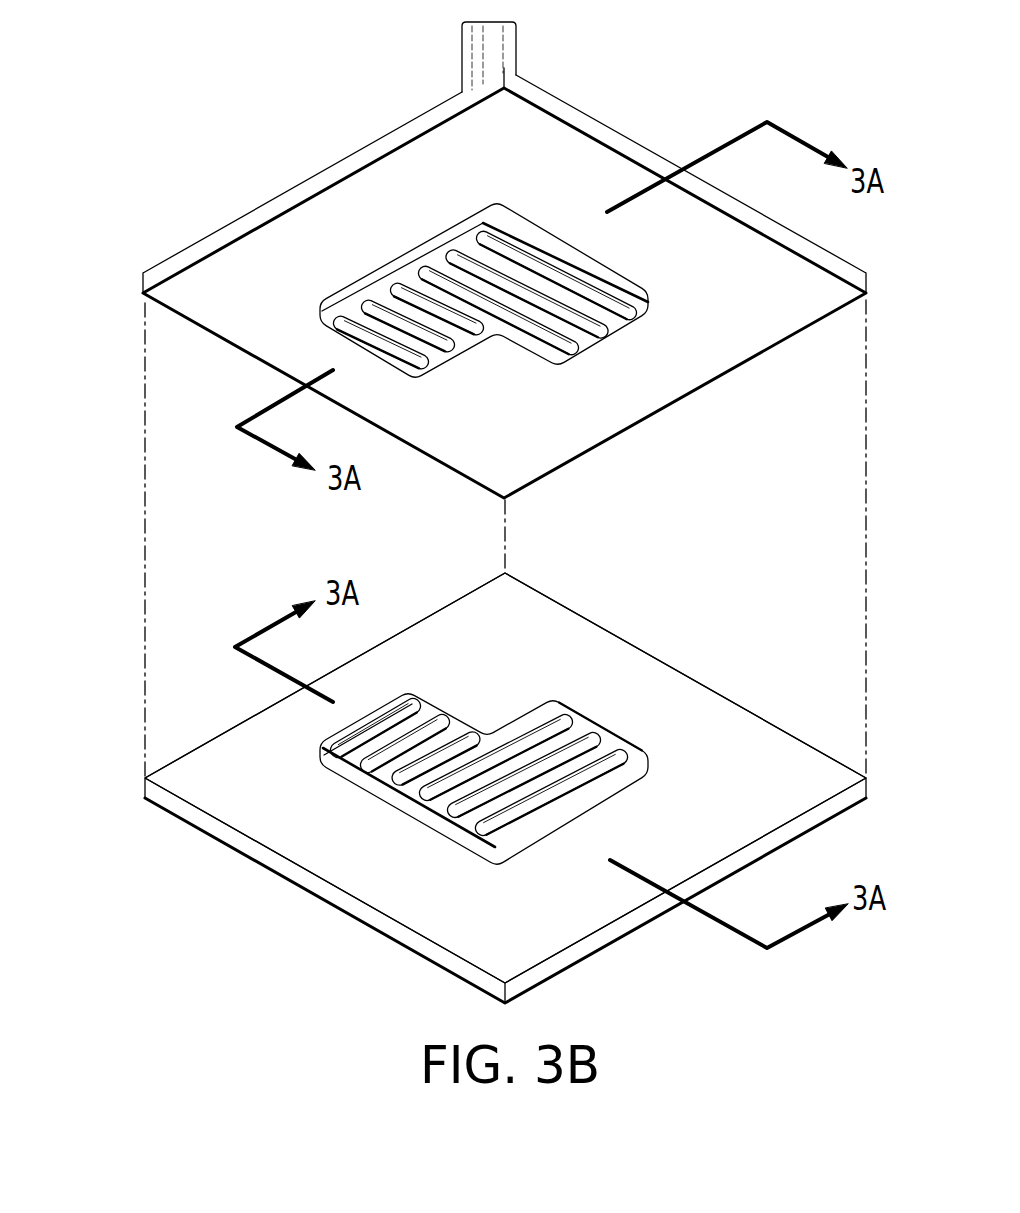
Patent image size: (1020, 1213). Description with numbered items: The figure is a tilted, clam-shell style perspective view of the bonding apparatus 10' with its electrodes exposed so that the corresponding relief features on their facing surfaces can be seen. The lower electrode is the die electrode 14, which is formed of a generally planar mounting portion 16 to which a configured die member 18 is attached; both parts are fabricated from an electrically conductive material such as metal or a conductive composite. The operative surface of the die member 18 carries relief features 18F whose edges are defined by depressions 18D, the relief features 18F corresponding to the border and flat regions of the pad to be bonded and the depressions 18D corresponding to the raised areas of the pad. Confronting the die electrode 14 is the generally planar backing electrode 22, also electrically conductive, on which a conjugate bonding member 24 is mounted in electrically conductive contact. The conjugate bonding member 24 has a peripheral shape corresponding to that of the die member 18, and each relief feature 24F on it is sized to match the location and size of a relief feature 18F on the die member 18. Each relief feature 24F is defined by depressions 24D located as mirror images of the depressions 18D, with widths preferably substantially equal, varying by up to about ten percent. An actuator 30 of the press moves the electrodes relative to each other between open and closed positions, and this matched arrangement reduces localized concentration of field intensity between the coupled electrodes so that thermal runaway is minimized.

The bonding apparatus 10' is at (461, 536).
The die electrode 14 is at (340, 923).
The mounting portion 16 is at (427, 950).
The die member 18 is at (487, 862).
The depressions 18D is at (620, 757).
The relief features 18F is at (483, 828).
The backing electrode 22 is at (182, 252).
The conjugate bonding member 24 is at (640, 335).
The depressions 24D is at (422, 362).
The relief feature 24F is at (483, 238).
The actuator 30 is at (462, 48).